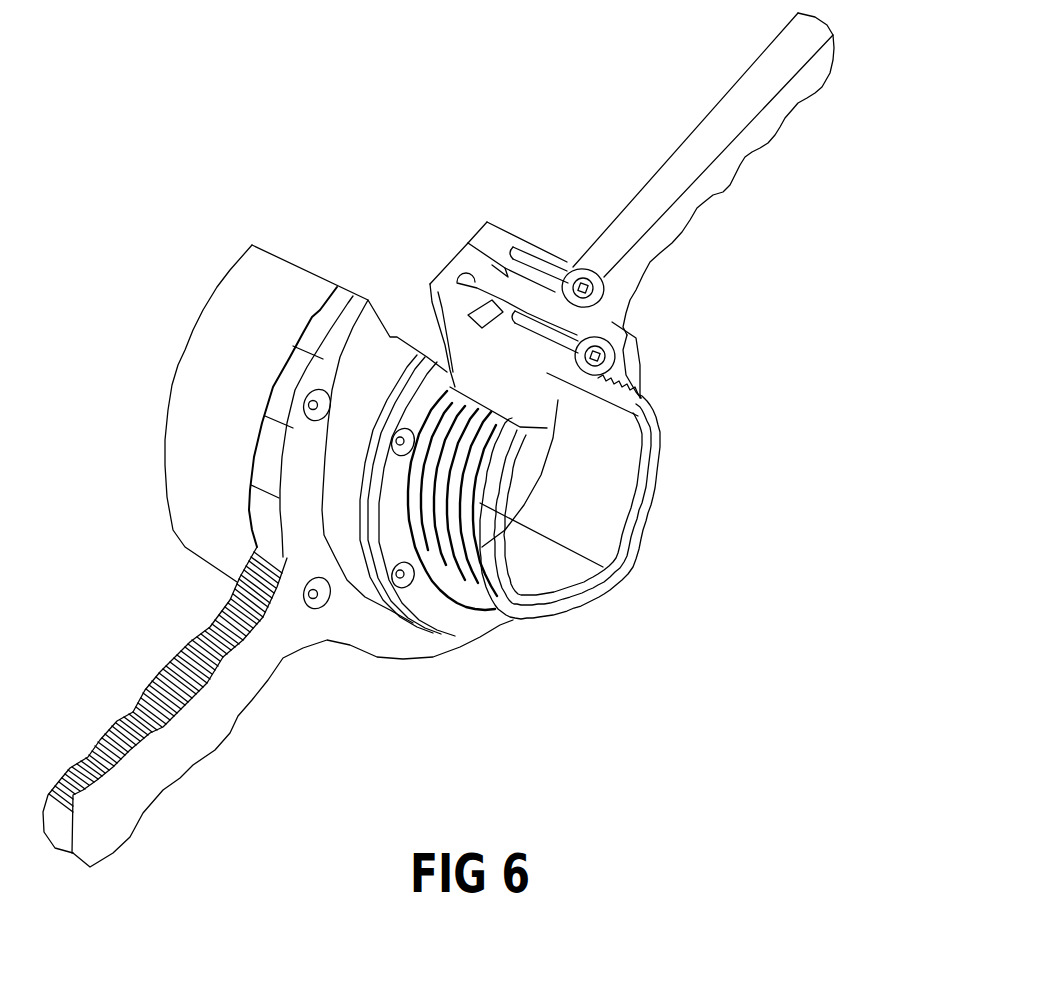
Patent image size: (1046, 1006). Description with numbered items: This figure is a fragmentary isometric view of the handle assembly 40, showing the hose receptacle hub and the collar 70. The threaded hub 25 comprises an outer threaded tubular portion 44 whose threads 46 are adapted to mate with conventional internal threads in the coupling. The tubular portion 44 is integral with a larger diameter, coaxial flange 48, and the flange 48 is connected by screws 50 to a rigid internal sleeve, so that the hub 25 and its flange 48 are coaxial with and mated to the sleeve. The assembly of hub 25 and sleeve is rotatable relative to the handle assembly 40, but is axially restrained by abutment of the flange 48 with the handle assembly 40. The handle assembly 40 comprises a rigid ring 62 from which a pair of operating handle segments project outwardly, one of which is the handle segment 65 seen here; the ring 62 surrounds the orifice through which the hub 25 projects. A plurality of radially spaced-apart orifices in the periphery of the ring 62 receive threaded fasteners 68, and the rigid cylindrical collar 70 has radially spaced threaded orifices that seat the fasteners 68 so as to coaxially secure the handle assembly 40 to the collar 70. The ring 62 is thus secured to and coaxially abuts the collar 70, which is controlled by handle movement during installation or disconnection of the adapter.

The threaded hub 25 is at (701, 415).
The handle assembly 40 is at (703, 174).
The threaded tubular portion 44 is at (571, 522).
The threads 46 is at (574, 500).
The flange 48 is at (434, 543).
The screws 50 is at (583, 325).
The ring 62 is at (345, 310).
The operating handle segment 65 is at (278, 715).
The threaded fasteners 68 is at (360, 708).
The collar 70 is at (306, 371).